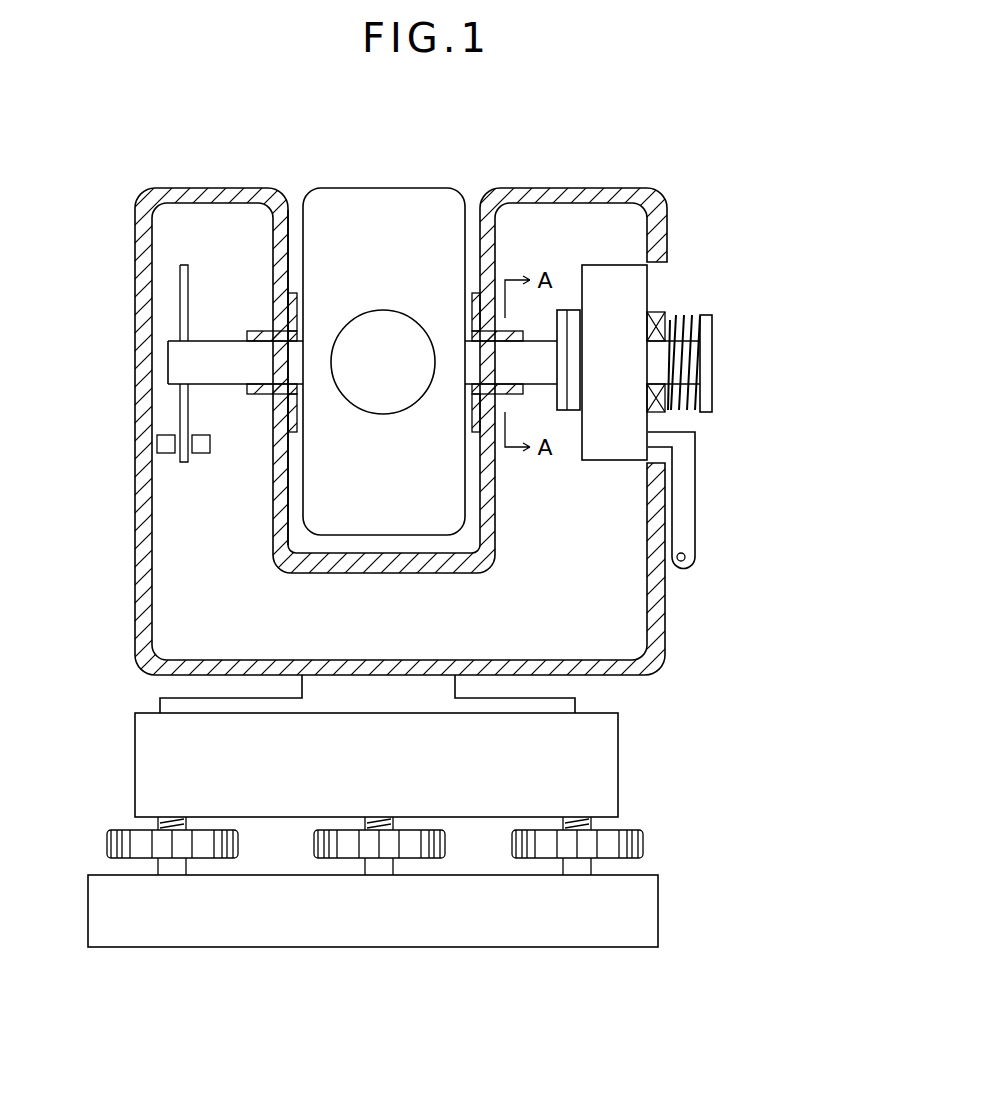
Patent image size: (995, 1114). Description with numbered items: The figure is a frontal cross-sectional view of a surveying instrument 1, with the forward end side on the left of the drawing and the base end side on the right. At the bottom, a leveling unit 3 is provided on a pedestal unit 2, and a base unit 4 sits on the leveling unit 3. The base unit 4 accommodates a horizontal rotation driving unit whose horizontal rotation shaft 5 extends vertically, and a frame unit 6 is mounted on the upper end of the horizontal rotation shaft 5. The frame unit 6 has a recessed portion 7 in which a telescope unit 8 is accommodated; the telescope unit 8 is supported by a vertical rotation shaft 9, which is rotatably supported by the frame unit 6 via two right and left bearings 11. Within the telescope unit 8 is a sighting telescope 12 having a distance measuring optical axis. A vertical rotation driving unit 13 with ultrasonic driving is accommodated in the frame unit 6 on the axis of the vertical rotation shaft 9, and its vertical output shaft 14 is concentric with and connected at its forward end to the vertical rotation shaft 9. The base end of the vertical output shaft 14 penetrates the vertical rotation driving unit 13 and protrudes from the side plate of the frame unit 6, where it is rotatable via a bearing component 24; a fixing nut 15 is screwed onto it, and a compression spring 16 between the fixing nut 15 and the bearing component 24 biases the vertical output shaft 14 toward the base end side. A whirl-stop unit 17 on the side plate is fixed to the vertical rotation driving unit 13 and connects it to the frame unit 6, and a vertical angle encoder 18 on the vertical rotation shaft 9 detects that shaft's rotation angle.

The surveying instrument 1 is at (532, 160).
The pedestal unit 2 is at (658, 903).
The leveling unit 3 is at (655, 811).
The base unit 4 is at (618, 757).
The horizontal rotation shaft 5 is at (458, 690).
The frame unit 6 is at (665, 612).
The recessed portion 7 is at (288, 227).
The telescope unit 8 is at (370, 188).
The vertical rotation shaft 9 is at (217, 337).
The bearing 11 is at (258, 397).
The sighting telescope 12 is at (384, 310).
The vertical rotation driving unit 13 is at (613, 462).
The vertical output shaft 14 is at (575, 413).
The fixing nut 15 is at (713, 360).
The compression spring 16 is at (690, 316).
The whirl-stop unit 17 is at (695, 480).
The vertical angle encoder 18 is at (196, 481).
The bearing component 24 is at (642, 327).